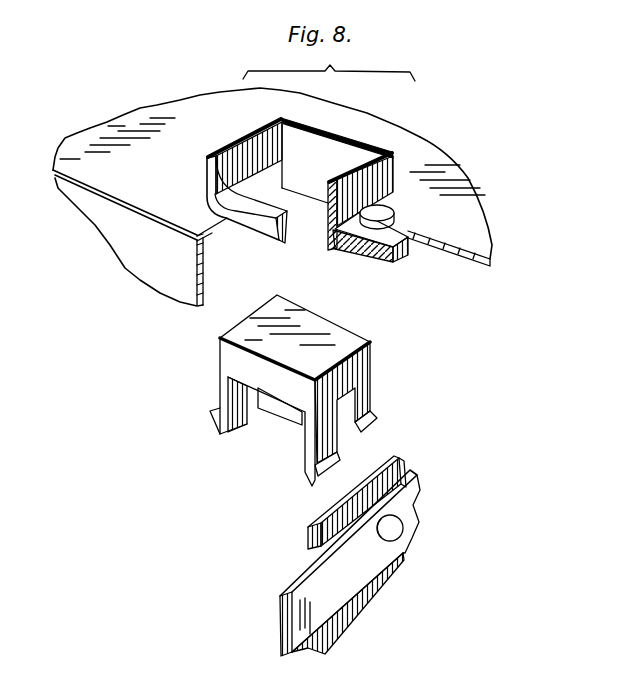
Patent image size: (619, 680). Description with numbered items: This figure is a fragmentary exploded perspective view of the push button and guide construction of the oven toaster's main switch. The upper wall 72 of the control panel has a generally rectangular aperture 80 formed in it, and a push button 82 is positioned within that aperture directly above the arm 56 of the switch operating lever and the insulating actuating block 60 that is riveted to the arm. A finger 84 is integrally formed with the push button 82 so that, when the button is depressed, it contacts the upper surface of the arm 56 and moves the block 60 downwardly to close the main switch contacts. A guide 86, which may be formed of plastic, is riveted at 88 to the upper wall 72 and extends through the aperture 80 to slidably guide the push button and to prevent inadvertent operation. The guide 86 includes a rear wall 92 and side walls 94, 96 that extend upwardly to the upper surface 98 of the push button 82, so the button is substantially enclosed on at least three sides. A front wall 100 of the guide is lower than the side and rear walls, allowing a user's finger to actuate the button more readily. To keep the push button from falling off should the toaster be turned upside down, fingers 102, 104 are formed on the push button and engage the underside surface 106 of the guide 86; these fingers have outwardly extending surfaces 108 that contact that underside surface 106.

The arm 56 is at (352, 578).
The actuating block 60 is at (327, 517).
The upper wall 72 is at (157, 112).
The aperture 80 is at (214, 203).
The push button 82 is at (304, 390).
The finger 84 is at (283, 416).
The guide 86 is at (432, 142).
The rivet 88 is at (396, 213).
The rear wall 92 is at (362, 144).
The side wall 94 is at (260, 132).
The side wall 96 is at (390, 177).
The upper surface 98 is at (234, 330).
The front wall 100 is at (206, 168).
The finger 102 is at (233, 397).
The finger 104 is at (355, 455).
The underside surface 106 is at (268, 178).
The outwardly extending surfaces 108 is at (372, 422).